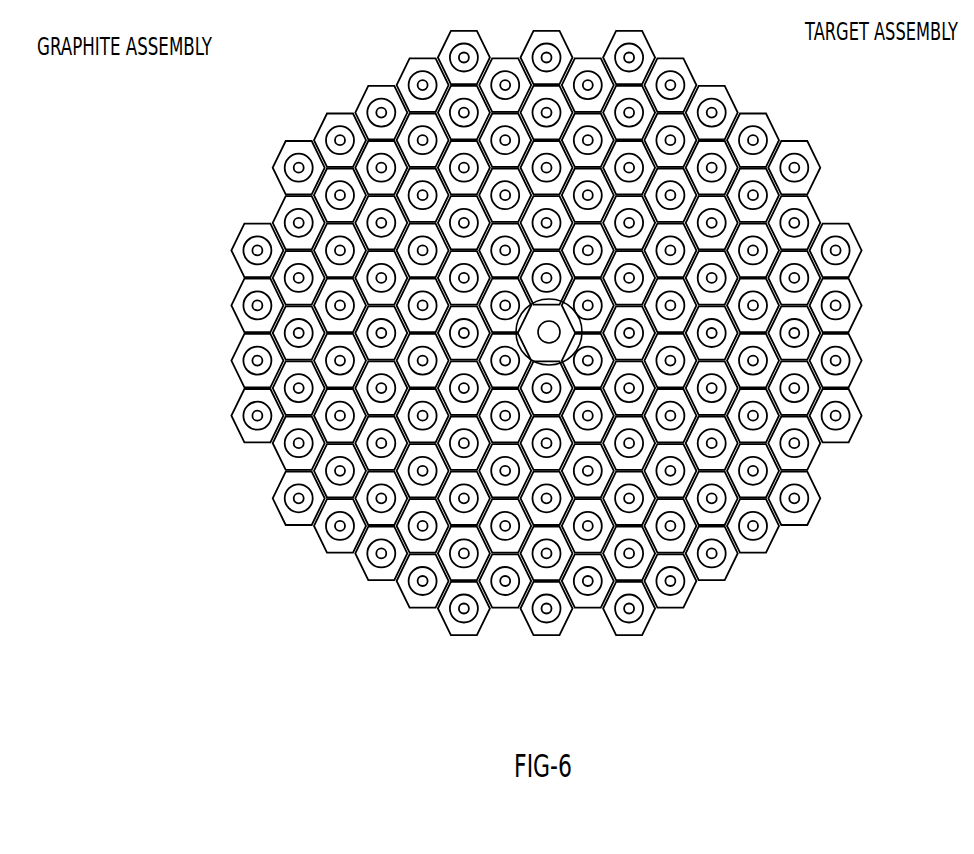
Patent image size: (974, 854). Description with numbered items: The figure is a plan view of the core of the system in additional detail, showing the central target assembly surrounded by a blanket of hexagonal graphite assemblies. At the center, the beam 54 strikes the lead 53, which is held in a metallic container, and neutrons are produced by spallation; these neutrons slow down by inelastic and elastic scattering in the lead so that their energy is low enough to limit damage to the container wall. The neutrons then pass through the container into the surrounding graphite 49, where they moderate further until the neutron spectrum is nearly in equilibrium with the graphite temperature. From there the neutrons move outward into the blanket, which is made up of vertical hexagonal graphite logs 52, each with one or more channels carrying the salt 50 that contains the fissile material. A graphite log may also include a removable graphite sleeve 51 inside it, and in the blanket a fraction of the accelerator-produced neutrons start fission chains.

The graphite 49 is at (605, 340).
The salt 50 is at (366, 108).
The graphite sleeve 51 is at (317, 120).
The graphite log 52 is at (263, 152).
The lead 53 is at (586, 320).
The beam 54 is at (565, 315).